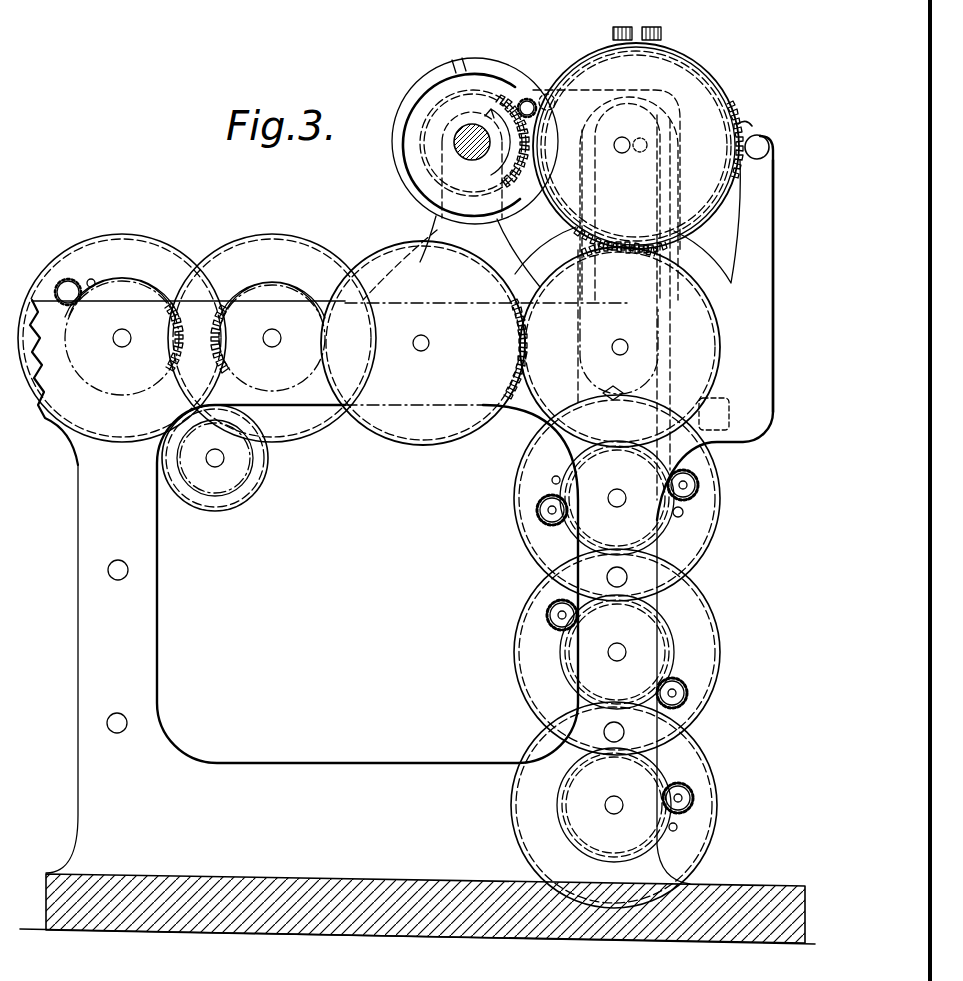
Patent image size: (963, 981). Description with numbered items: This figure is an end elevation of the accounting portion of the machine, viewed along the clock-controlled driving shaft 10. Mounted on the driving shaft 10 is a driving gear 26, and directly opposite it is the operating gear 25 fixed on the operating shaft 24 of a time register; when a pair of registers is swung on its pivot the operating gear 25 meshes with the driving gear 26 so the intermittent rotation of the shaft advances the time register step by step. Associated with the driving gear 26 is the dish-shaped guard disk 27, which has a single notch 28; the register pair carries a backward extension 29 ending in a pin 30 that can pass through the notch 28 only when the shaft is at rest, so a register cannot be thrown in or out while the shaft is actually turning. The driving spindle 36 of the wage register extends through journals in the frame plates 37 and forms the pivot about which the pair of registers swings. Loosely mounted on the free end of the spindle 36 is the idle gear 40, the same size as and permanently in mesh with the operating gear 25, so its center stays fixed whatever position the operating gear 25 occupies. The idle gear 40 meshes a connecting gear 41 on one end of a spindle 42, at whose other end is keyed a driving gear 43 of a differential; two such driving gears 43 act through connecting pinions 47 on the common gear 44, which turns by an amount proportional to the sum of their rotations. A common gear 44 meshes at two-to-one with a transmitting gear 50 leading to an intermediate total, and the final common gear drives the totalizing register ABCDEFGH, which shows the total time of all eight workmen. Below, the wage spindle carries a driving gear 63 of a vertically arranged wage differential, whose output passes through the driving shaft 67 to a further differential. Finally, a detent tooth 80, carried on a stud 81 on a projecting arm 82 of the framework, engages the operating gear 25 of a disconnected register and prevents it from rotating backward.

The driving shaft 10 is at (468, 148).
The operating shaft 24 is at (621, 153).
The operating gear 25 is at (683, 78).
The driving gear 26 is at (427, 137).
The guard disk 27 is at (418, 90).
The notch 28 is at (457, 70).
The backward extension 29 is at (557, 104).
The pin 30 is at (530, 100).
The driving spindle 36 is at (615, 346).
The frame plate 37 is at (713, 380).
The idle gear 40 is at (695, 305).
The connecting gear 41 is at (365, 412).
The spindle 42 is at (425, 351).
The driving gear of differential 43 is at (118, 292).
The common gear 44 is at (101, 242).
The connecting pinion 47 is at (68, 278).
The transmitting gear 50 is at (278, 290).
The driving gear of wage differential 63 is at (667, 505).
The driving shaft 67 is at (613, 507).
The detent tooth 80 is at (748, 127).
The stud 81 is at (764, 143).
The projecting arm 82 is at (770, 207).
The totalizing register ABCDEFGH is at (224, 494).